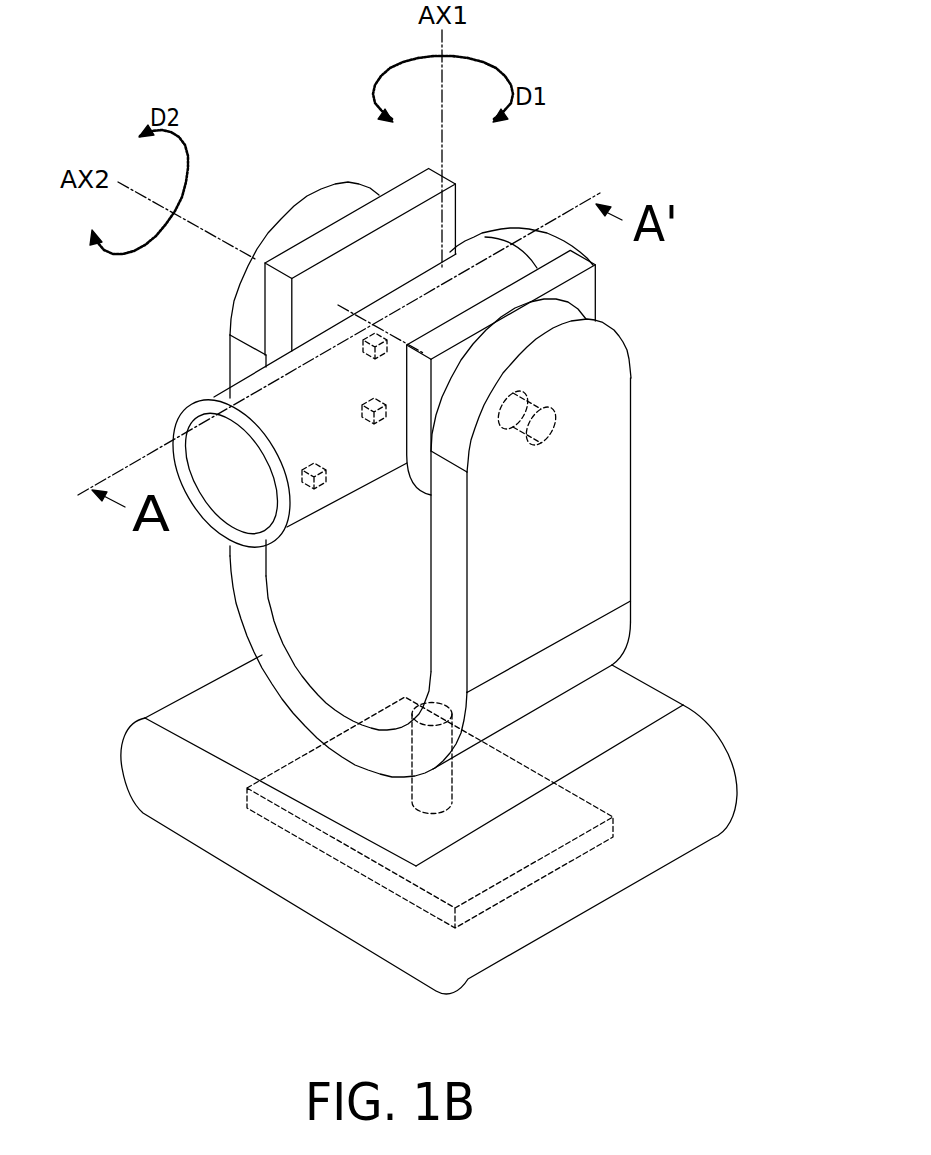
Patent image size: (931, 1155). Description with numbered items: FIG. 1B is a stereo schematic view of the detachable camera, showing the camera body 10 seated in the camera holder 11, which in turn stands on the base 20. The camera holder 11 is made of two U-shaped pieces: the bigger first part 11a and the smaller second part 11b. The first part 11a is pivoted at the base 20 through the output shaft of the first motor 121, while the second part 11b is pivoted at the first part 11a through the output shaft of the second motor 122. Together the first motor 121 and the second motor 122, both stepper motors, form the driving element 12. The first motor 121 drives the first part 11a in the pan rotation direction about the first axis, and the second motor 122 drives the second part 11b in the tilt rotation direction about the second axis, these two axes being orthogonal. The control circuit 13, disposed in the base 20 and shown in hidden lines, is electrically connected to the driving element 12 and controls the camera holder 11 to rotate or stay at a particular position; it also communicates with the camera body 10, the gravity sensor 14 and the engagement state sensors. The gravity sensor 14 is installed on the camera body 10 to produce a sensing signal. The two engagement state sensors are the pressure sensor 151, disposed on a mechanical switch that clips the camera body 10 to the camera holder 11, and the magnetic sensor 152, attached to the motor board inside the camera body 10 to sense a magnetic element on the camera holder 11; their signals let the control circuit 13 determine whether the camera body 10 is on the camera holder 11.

The camera body 10 is at (204, 382).
The camera holder 11 is at (540, 431).
The first part 11a is at (598, 496).
The second part 11b is at (581, 290).
The driving element 12 is at (523, 498).
The first motor 121 is at (441, 797).
The second motor 122 is at (555, 434).
The control circuit 13 is at (537, 882).
The gravity sensor 14 is at (402, 362).
The pressure sensor 151 is at (320, 487).
The magnetic sensor 152 is at (387, 420).
The base 20 is at (665, 850).